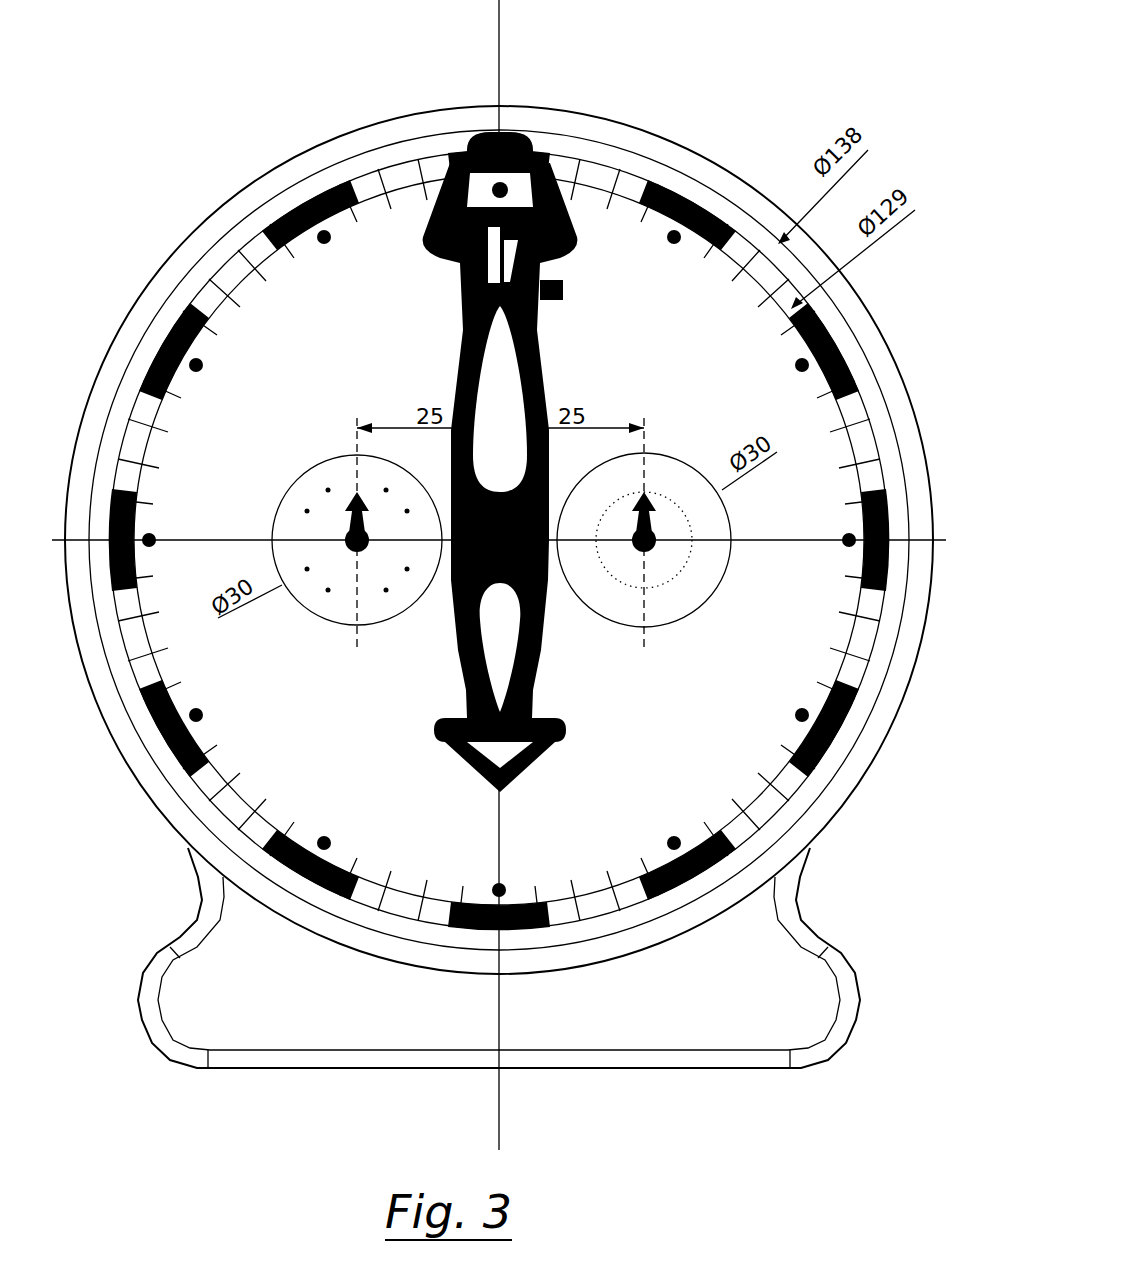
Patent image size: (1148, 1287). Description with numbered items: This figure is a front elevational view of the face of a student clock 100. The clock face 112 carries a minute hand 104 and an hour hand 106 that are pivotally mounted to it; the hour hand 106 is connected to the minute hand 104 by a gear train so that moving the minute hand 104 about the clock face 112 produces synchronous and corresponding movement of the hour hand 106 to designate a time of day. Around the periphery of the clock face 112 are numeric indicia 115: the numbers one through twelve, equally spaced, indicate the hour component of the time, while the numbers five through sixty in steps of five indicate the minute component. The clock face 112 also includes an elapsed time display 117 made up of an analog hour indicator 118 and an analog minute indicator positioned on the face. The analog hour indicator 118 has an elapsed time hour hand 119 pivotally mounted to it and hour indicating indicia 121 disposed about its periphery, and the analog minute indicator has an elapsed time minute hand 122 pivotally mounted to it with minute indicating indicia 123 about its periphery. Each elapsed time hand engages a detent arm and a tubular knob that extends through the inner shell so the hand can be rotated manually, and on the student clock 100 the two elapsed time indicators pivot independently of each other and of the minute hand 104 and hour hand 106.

The student clock 100 is at (504, 564).
The clock face 112 is at (858, 289).
The minute hand 104 is at (536, 362).
The hour hand 106 is at (532, 687).
The numeric indicia 115 is at (782, 668).
The elapsed time display 117 is at (400, 610).
The analog hour indicator 118 is at (328, 600).
The elapsed time hour hand 119 is at (366, 522).
The hour indicating indicia 121 is at (365, 483).
The elapsed time minute hand 122 is at (652, 523).
The sub-dial minute numerals 123 is at (653, 480).